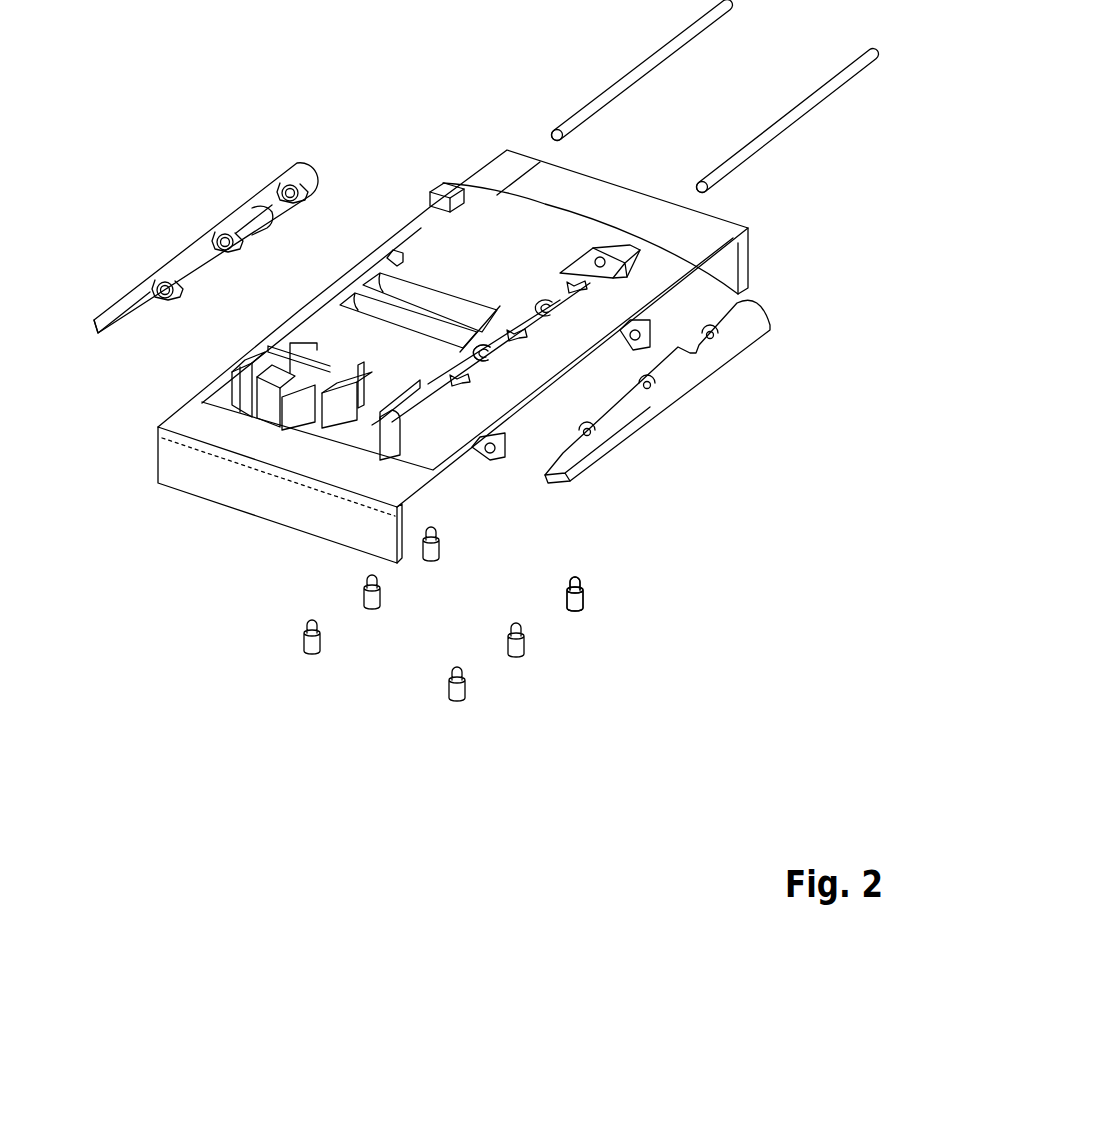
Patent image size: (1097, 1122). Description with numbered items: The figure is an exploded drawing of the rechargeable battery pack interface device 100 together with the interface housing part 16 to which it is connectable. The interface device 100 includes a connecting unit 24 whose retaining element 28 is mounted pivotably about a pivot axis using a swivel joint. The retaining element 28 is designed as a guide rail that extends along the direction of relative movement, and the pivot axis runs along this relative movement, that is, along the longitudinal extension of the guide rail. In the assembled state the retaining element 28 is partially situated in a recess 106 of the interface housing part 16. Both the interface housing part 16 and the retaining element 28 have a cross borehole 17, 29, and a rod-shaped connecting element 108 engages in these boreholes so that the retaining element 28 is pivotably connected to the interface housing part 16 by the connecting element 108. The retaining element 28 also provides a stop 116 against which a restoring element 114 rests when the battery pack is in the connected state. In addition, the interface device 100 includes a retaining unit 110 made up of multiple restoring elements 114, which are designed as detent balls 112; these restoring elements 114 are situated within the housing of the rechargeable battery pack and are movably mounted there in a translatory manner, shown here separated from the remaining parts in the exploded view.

The rechargeable battery pack interface device 100 is at (399, 143).
The interface housing part 16 is at (602, 200).
The recess 106 is at (428, 223).
The cross borehole 17 is at (478, 363).
The connecting element 108 is at (658, 57).
The connecting unit 24 is at (280, 142).
The retaining element 28 is at (252, 223).
The cross borehole 29 is at (167, 288).
The stop 116 is at (188, 287).
The retaining unit 110 is at (497, 560).
The detent balls 112 is at (582, 597).
The restoring elements 114 is at (662, 598).